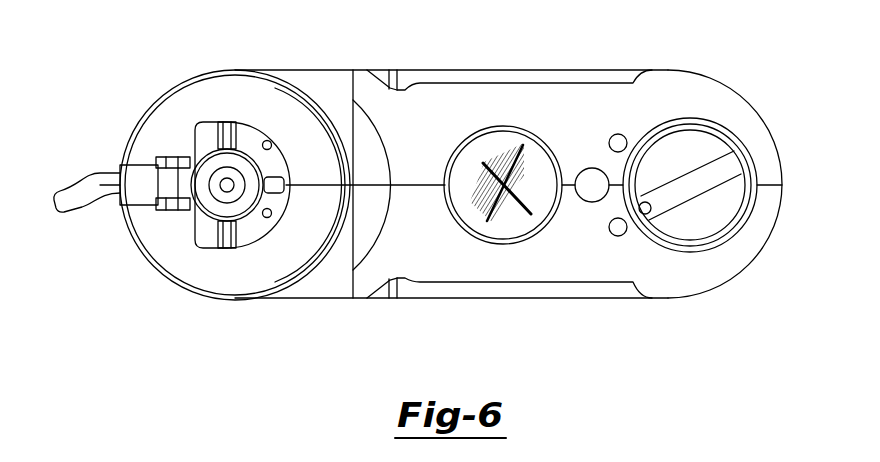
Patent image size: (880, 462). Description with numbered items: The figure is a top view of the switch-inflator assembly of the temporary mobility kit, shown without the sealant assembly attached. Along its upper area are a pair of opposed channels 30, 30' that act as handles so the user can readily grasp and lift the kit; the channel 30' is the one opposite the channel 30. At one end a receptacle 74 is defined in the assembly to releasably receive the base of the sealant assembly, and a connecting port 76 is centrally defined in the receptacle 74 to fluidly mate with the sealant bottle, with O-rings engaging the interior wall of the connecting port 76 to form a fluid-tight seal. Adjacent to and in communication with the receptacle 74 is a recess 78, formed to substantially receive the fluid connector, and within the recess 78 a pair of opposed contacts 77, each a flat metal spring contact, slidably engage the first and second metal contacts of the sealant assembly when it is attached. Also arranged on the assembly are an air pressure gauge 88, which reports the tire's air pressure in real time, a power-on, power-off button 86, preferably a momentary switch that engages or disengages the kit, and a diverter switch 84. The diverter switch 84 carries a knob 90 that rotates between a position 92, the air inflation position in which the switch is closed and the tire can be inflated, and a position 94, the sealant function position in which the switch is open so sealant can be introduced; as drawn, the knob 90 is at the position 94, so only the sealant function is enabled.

The channel 30 is at (451, 159).
The channel 30' is at (451, 308).
The receptacle 74 is at (248, 127).
The connecting port 76 is at (233, 190).
The opposed contacts 77 is at (172, 183).
The recess 78 is at (177, 160).
The diverter switch 84 is at (707, 136).
The power-on, power-off button 86 is at (588, 169).
The air pressure gauge 88 is at (513, 222).
The knob 90 is at (688, 184).
The position 92 is at (628, 133).
The position 94 is at (618, 236).